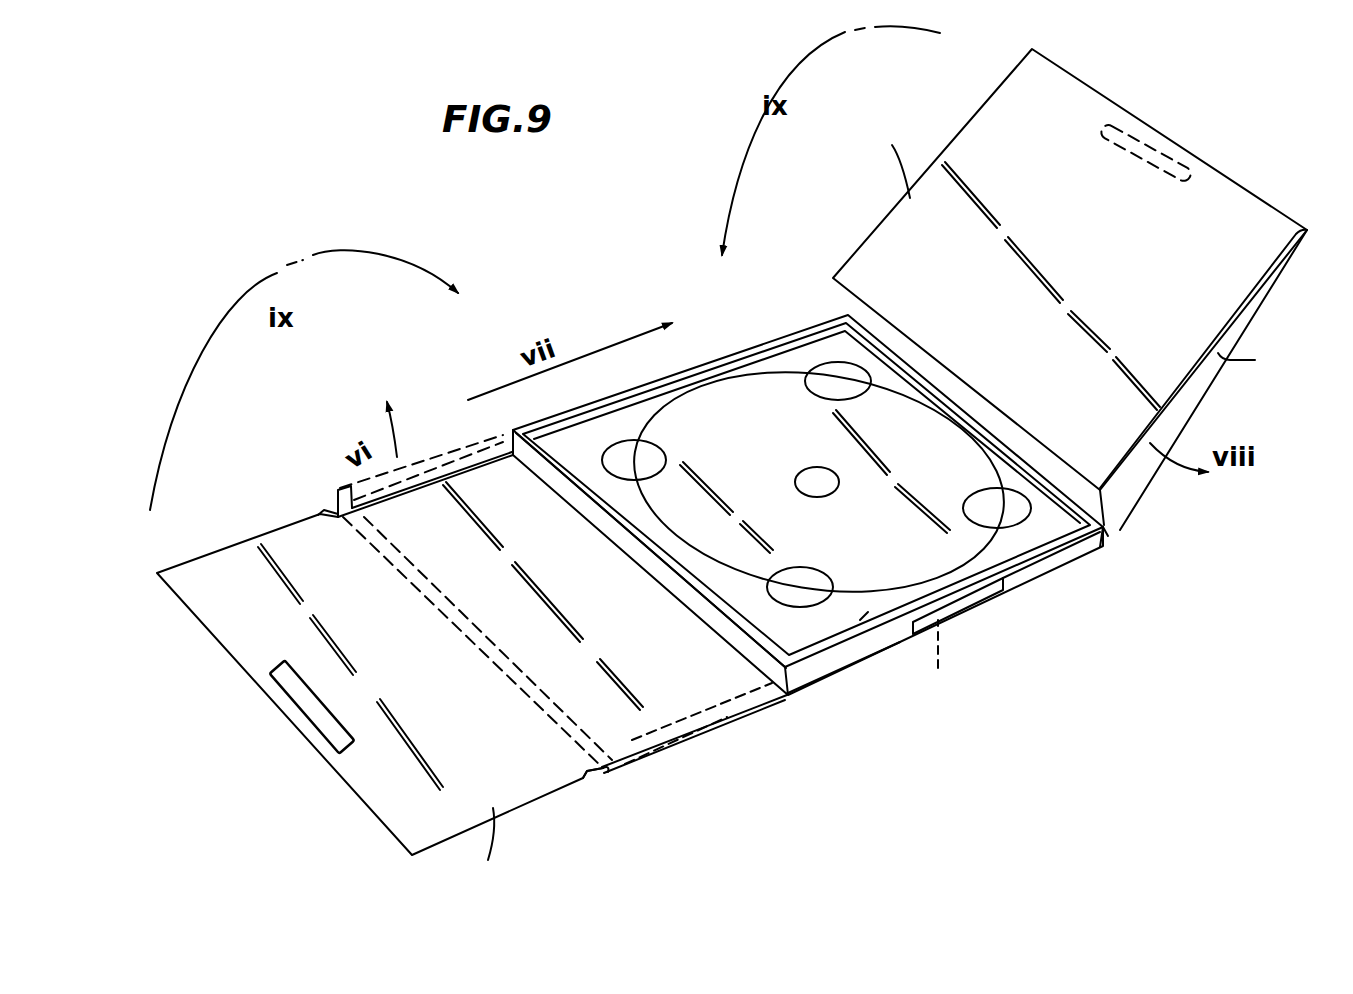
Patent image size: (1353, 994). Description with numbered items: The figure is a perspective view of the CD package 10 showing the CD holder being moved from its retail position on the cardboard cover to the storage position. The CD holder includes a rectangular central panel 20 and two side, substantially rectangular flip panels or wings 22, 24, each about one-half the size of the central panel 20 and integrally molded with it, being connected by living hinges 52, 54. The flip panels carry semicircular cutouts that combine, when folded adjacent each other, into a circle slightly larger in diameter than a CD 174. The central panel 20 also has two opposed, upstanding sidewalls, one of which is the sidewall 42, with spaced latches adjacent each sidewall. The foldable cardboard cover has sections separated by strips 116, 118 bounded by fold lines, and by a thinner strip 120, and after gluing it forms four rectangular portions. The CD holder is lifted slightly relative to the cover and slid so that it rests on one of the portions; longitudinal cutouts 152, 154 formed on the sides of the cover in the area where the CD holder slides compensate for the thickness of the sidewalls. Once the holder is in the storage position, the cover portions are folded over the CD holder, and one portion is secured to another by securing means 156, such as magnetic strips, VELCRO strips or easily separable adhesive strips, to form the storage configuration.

The CD package 10 is at (1281, 546).
The central panel 20 is at (603, 397).
The flip panel 22 is at (873, 610).
The flip panel 24 is at (1048, 535).
The sidewall 42 is at (990, 597).
The living hinge 52 is at (648, 567).
The living hinge 54 is at (1113, 523).
The strip 116 is at (740, 668).
The strip 118 is at (1117, 536).
The thinner strip 120 is at (1273, 200).
The longitudinal cutout 152 is at (600, 770).
The longitudinal cutout 154 is at (332, 520).
The securing means 156 is at (333, 728).
The CD 174 is at (728, 405).